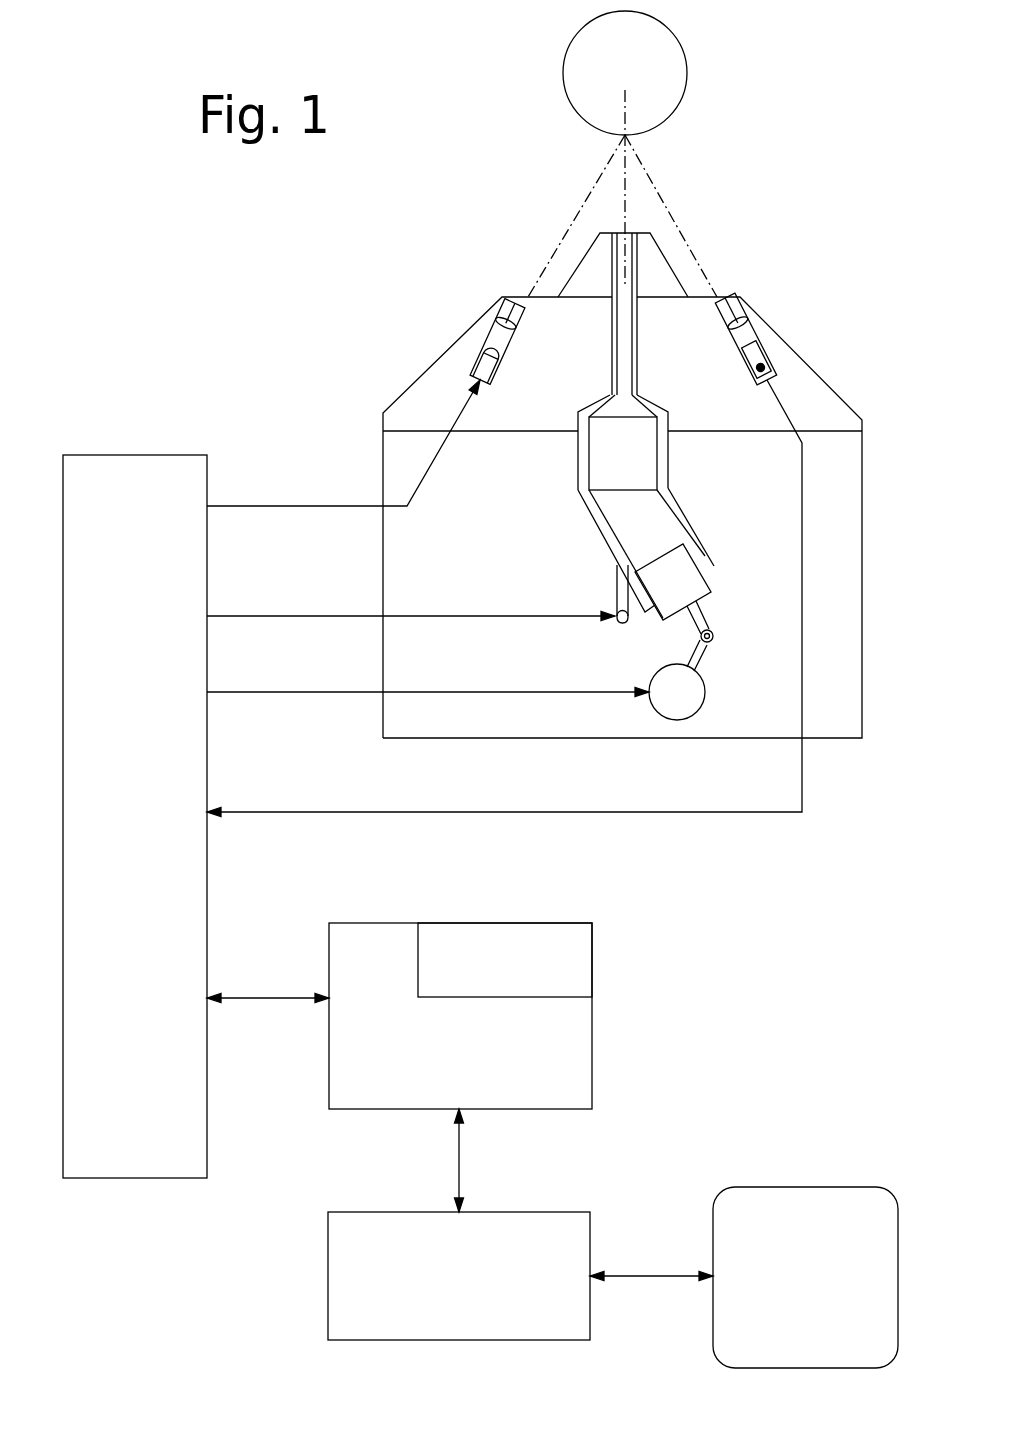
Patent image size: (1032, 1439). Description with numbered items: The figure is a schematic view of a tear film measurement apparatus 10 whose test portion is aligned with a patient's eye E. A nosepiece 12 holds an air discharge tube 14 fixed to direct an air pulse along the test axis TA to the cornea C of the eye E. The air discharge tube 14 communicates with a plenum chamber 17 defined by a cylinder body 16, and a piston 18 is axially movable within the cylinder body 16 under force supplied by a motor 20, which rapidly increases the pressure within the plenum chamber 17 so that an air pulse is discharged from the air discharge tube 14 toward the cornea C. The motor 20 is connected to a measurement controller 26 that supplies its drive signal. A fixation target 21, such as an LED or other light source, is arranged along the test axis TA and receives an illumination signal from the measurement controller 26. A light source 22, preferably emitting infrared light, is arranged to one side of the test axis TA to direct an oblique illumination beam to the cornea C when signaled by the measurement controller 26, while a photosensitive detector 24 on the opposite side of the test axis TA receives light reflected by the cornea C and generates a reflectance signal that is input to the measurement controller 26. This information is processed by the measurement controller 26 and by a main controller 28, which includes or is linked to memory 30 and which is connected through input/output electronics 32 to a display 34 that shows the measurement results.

The tear film measurement apparatus 10 is at (140, 256).
The nosepiece 12 is at (442, 355).
The air discharge tube 14 is at (637, 328).
The cylinder body 16 is at (598, 528).
The plenum chamber 17 is at (598, 460).
The piston 18 is at (689, 592).
The motor 20 is at (660, 668).
The fixation target 21 is at (615, 592).
The light source 22 is at (513, 350).
The photosensitive detector 24 is at (768, 352).
The measurement controller 26 is at (142, 452).
The main controller 28 is at (592, 1060).
The memory 30 is at (548, 930).
The input/output electronics 32 is at (368, 1212).
The display 34 is at (807, 1187).
The eye E is at (570, 97).
The cornea C is at (608, 133).
The test axis TA is at (627, 200).